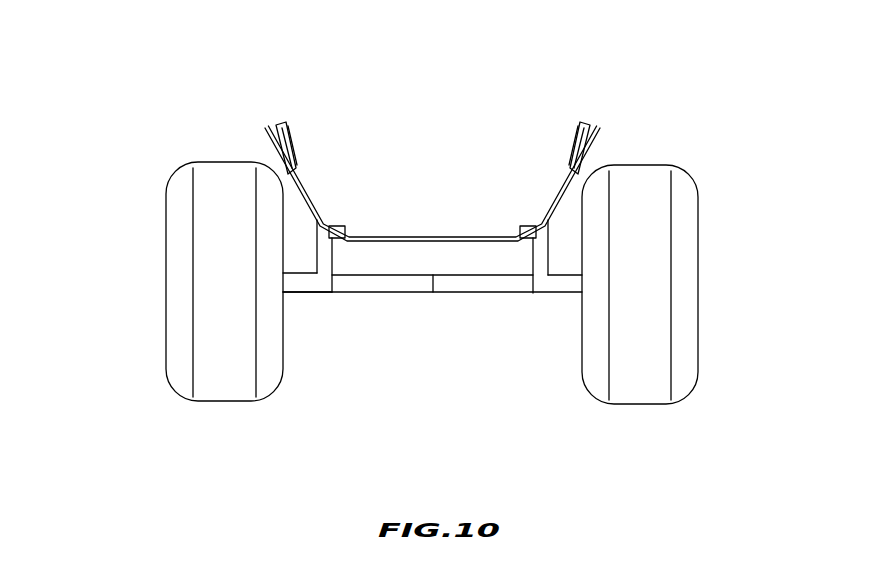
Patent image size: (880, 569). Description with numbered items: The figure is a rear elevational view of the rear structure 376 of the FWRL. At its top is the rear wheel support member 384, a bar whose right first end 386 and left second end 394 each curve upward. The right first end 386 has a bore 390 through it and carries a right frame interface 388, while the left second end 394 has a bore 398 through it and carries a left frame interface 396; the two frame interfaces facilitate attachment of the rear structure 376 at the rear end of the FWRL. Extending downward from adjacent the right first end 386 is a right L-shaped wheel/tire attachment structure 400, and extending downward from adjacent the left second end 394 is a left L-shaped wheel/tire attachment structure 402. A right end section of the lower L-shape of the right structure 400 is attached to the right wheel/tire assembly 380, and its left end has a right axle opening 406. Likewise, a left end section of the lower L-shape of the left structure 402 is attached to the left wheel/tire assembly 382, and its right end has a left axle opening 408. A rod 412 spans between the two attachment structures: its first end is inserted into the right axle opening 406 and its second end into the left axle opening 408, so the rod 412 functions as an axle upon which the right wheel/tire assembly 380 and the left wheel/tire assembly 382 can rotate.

The rear structure 376 is at (124, 104).
The right wheel/tire assembly 380 is at (663, 178).
The left wheel/tire assembly 382 is at (203, 187).
The rear wheel support member 384 is at (425, 237).
The right first end 386 is at (598, 143).
The right frame interface 388 is at (578, 175).
The bore 390 is at (602, 165).
The left second end 394 is at (270, 142).
The left frame interface 396 is at (283, 130).
The bore 398 is at (288, 150).
The right L-shaped wheel/tire attachment structure 400 is at (562, 284).
The left L-shaped wheel/tire attachment structure 402 is at (303, 284).
The right axle opening 406 is at (528, 295).
The left axle opening 408 is at (342, 294).
The rod 412 is at (443, 282).